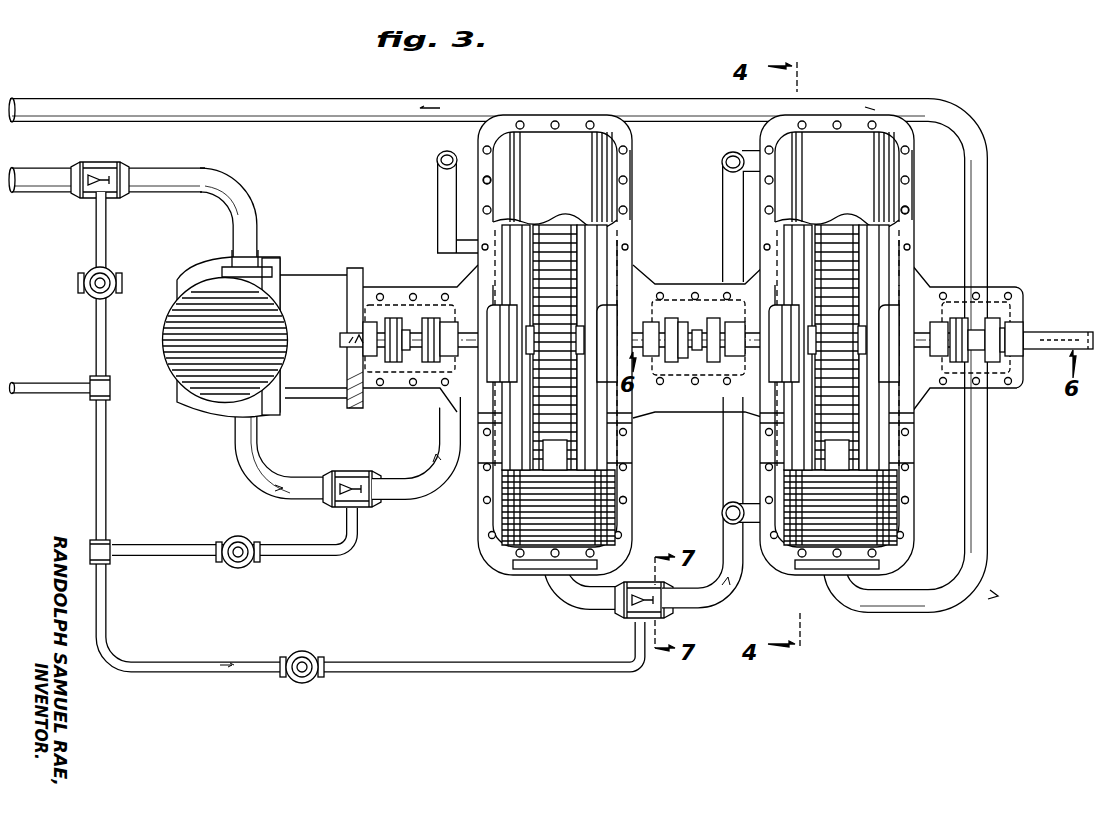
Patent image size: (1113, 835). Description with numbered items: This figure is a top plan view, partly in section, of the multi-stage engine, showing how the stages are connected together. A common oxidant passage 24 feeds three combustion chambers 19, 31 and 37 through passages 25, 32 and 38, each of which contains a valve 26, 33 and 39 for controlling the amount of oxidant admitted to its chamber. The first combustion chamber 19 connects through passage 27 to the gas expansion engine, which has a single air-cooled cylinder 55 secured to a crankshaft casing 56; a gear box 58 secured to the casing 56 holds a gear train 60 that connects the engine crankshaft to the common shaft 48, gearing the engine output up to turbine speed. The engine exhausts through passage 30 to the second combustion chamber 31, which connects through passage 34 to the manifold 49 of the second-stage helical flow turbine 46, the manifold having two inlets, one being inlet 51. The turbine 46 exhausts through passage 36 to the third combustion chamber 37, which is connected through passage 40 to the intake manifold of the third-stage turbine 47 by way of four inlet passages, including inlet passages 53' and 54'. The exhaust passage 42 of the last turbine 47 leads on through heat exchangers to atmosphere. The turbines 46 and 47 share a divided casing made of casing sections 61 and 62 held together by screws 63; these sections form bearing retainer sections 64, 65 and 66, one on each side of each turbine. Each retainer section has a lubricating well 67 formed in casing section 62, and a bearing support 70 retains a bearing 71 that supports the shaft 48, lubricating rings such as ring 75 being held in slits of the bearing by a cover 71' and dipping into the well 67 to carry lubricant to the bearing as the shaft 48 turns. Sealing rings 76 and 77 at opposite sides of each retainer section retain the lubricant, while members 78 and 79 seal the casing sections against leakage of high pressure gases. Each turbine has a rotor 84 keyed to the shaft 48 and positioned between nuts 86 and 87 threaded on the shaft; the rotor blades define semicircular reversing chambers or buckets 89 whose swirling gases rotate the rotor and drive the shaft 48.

The combustion chamber 19 is at (116, 166).
The common passage 24 is at (30, 394).
The passage 25 is at (107, 246).
The valve 26 is at (117, 281).
The passage 27 is at (238, 178).
The passage 30 is at (293, 500).
The combustion chamber 31 is at (370, 506).
The passage 32 is at (314, 558).
The valve 33 is at (236, 570).
The passage 34 is at (432, 500).
The passage 36 is at (598, 610).
The combustion chamber 37 is at (666, 618).
The passage 38 is at (258, 673).
The valve 39 is at (308, 683).
The passage 40 is at (744, 556).
The exhaust passage 42 is at (312, 98).
The helical flow turbine 46 is at (634, 164).
The helical flow turbine 47 is at (910, 167).
The common shaft 48 is at (355, 337).
The manifold 49 is at (437, 208).
The inlet 51 is at (462, 246).
The inlet passage 53' is at (734, 205).
The inlet passage 54' is at (723, 514).
The cylinder 55 is at (170, 352).
The crankshaft casing 56 is at (200, 413).
The gear box 58 is at (326, 274).
The gear train 60 is at (350, 354).
The casing section 61 is at (633, 202).
The casing section 62 is at (625, 237).
The screws 63 is at (487, 175).
The bearing retainer section 64 is at (390, 289).
The bearing retainer section 65 is at (686, 288).
The bearing retainer section 66 is at (1015, 290).
The lubricating well 67 is at (390, 365).
The bearing support 70 is at (408, 352).
The bearing 71 is at (856, 322).
The cover 71' is at (735, 340).
The lubricating ring 75 is at (1012, 358).
The sealing ring 76 is at (363, 340).
The sealing ring 77 is at (450, 358).
The sealing member 78 is at (500, 308).
The sealing member 79 is at (882, 308).
The rotor 84 is at (577, 415).
The nut 86 is at (582, 358).
The nut 87 is at (528, 358).
The reversing chambers or buckets 89 is at (543, 431).